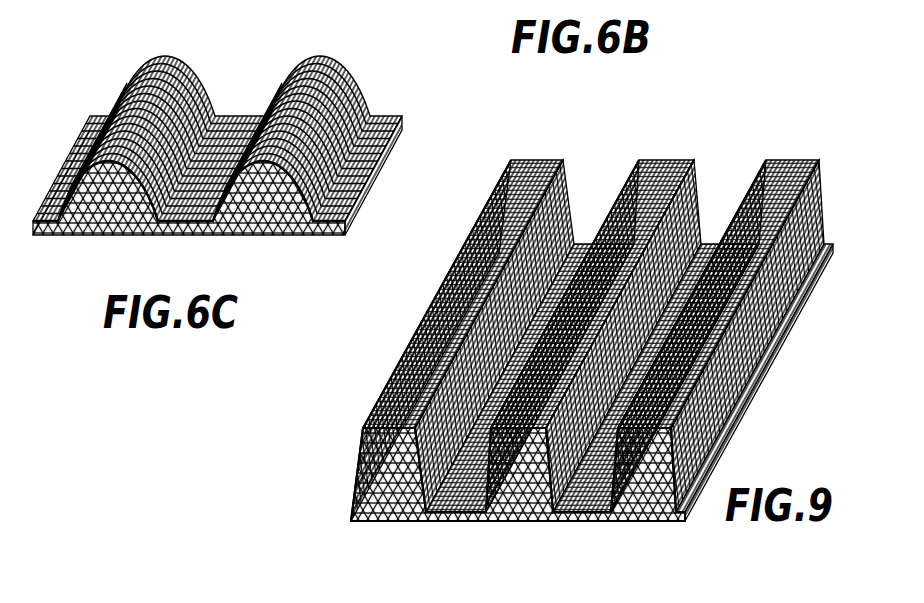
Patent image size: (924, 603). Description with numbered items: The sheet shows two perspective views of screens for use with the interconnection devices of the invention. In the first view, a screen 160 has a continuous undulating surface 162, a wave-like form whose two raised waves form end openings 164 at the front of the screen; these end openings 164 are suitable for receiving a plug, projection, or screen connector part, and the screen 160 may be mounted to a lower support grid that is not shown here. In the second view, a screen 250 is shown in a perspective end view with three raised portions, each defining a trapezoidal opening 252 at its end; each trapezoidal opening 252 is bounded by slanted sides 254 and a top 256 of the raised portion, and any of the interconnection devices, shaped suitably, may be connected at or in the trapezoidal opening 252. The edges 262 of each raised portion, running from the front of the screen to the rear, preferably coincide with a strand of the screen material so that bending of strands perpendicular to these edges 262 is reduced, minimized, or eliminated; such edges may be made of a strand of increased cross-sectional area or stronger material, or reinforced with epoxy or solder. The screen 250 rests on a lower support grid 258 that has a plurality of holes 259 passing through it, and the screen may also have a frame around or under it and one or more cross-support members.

In FIG. 6C, the screen 160 is at (233, 160).
In FIG. 6C, the continuous undulating surface 162 is at (187, 102).
In FIG. 6C, the end openings 164 is at (118, 223).
In FIG. 9, the screen 250 is at (583, 337).
In FIG. 9, the trapezoidal opening 252 is at (373, 468).
In FIG. 9, the slanted sides 254 is at (400, 386).
In FIG. 9, the tops 256 is at (531, 152).
In FIG. 9, the lower support grid 258 is at (390, 502).
In FIG. 9, the holes 259 is at (510, 502).
In FIG. 9, the edges 262 is at (483, 185).